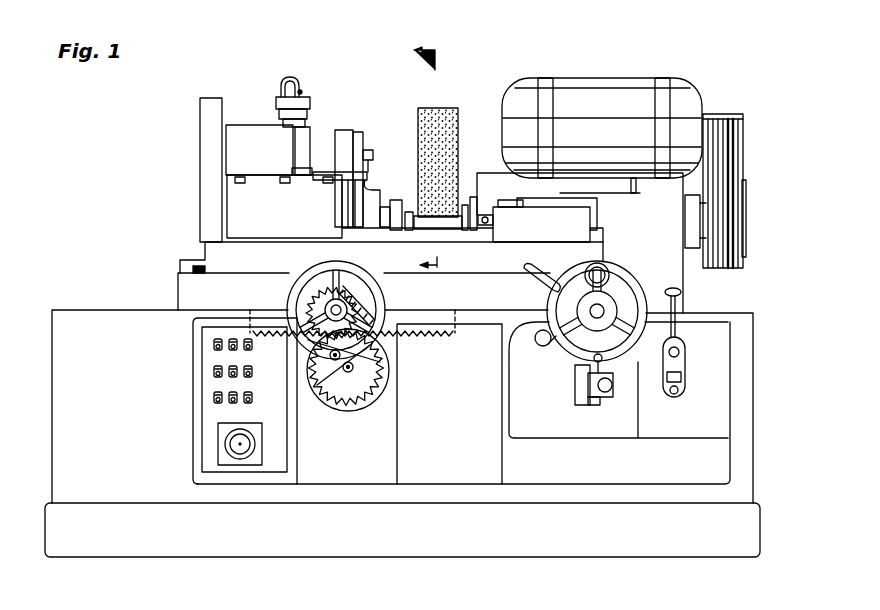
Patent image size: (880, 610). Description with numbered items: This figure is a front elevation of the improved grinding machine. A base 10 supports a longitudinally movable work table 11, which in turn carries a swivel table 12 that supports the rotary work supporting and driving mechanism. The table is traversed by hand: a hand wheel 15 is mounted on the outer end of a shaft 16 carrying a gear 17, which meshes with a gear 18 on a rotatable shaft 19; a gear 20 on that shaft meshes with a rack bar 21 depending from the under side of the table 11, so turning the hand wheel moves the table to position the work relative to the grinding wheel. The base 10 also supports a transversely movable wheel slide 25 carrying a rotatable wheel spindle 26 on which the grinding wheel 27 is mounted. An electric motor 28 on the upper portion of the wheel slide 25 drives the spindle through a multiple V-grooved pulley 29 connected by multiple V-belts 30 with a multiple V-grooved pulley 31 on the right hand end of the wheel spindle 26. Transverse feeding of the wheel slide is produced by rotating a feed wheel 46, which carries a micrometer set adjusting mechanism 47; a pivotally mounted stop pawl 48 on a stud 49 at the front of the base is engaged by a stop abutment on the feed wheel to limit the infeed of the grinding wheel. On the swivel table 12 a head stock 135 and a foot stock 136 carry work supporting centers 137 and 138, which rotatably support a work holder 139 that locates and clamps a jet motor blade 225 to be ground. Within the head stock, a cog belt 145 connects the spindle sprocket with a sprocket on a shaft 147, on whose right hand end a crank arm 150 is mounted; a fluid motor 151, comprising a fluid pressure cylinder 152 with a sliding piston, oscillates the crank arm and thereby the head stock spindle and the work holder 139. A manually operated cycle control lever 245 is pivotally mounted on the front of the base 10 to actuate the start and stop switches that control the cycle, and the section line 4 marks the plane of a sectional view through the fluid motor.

The section line 4- 4 is at (434, 158).
The base 10 is at (78, 318).
The work table 11 is at (187, 291).
The swivel table 12 is at (217, 255).
The hand wheel 15 is at (297, 292).
The shaft 16 is at (376, 295).
The gear 17 is at (349, 296).
The gear 18 is at (323, 395).
The shaft 19 is at (346, 392).
The gear 20 is at (380, 378).
The rack bar 21 is at (415, 341).
The wheel slide 25 is at (557, 190).
The wheel spindle 26 is at (698, 262).
The grinding wheel 27 is at (423, 108).
The electric motor 28 is at (623, 96).
The multiple V-grooved pulley 29 is at (742, 130).
The multiple V-belts 30 is at (730, 167).
The multiple V-grooved pulley 31 is at (743, 238).
The feed wheel 46 is at (630, 285).
The micrometer set adjusting mechanism 47 is at (608, 262).
The stop pawl 48 is at (542, 320).
The stud 49 is at (547, 347).
The head stock 135 is at (248, 203).
The foot stock 136 is at (577, 220).
The work supporting center 137 is at (385, 205).
The work supporting center 138 is at (500, 220).
The work holder 139 is at (401, 235).
The cog belt 145 is at (210, 121).
The shaft 147 is at (312, 150).
The crank arm 150 is at (292, 128).
The fluid motor 151 is at (293, 88).
The fluid pressure cylinder 152 is at (350, 138).
The jet motor blade 225 is at (445, 222).
The cycle control lever 245 is at (690, 310).